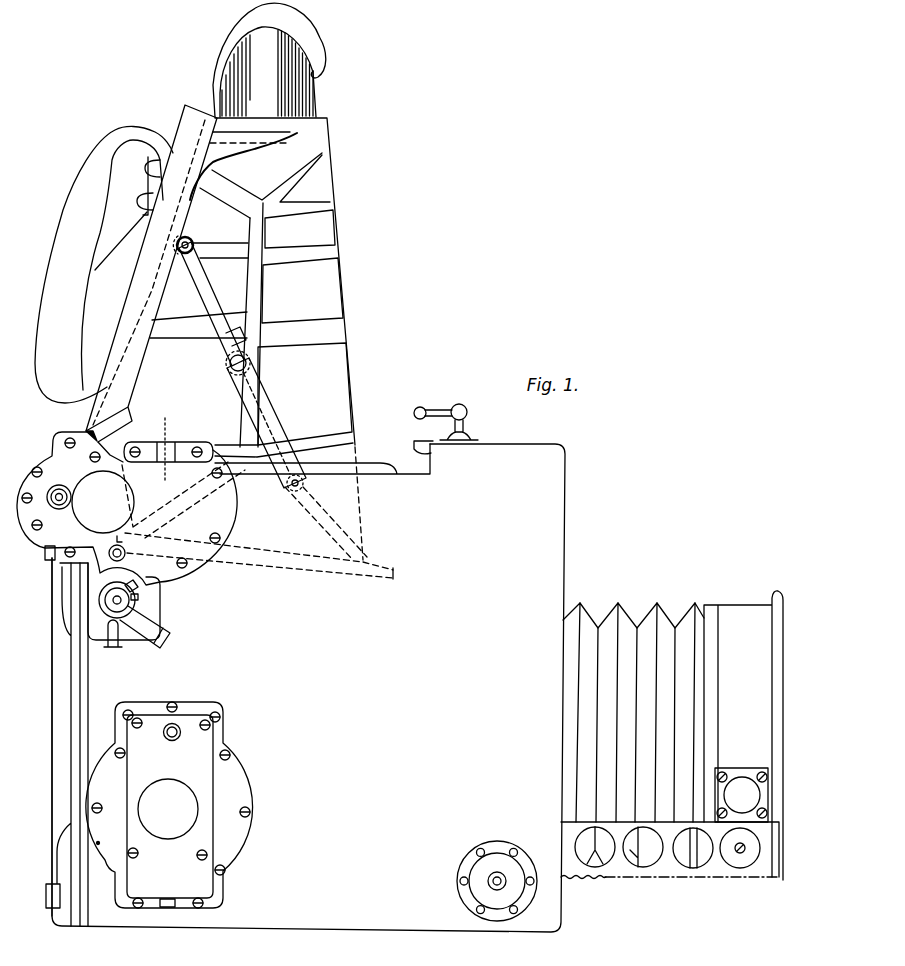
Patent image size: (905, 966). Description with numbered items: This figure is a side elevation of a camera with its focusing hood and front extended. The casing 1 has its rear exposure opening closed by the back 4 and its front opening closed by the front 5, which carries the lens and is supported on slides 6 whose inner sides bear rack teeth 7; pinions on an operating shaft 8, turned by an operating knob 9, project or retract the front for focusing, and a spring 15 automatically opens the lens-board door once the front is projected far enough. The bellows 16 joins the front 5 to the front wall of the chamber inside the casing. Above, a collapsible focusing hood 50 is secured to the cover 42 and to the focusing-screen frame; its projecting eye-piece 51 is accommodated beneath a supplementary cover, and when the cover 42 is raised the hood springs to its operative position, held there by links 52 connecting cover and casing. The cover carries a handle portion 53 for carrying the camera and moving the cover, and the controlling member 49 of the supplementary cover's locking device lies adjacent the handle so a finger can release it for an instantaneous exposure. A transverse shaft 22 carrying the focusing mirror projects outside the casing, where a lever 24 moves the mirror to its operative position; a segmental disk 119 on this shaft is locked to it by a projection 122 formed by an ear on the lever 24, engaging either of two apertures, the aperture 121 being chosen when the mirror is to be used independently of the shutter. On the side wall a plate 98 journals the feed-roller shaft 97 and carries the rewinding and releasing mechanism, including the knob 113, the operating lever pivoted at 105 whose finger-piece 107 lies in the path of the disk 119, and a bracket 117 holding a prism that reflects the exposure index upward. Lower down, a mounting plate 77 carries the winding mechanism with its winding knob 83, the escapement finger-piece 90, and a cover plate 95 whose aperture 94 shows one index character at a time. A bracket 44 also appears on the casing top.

The casing 1 is at (308, 688).
The back 4 is at (63, 663).
The front 5 is at (777, 708).
The slides 6 is at (719, 866).
The rack teeth 7 is at (585, 878).
The operating shaft 8 is at (498, 872).
The operating knob 9 is at (477, 887).
The spring 15 is at (168, 449).
The bellows 16 is at (622, 622).
The shaft 22 is at (130, 601).
The lever 24 is at (155, 647).
The cover 42 is at (151, 273).
The bracket 44 is at (428, 451).
The controlling member 49 is at (460, 414).
The focusing hood 50 is at (325, 238).
The eye-piece 51 is at (318, 80).
The links 52 is at (268, 418).
The handle portion 53 is at (104, 264).
The mounting plate 77 is at (237, 785).
The winding knob 83 is at (184, 817).
The finger-piece 90 is at (167, 907).
The aperture 94 is at (167, 736).
The cover plate 95 is at (170, 806).
The shaft 97 is at (61, 490).
The plate 98 is at (127, 508).
The pivot 105 is at (126, 555).
The finger-piece 107 is at (113, 648).
The knob 113 is at (103, 502).
The bracket 117 is at (185, 445).
The segmental disk 119 is at (110, 548).
The aperture 121 is at (138, 585).
The projection 122 is at (139, 597).